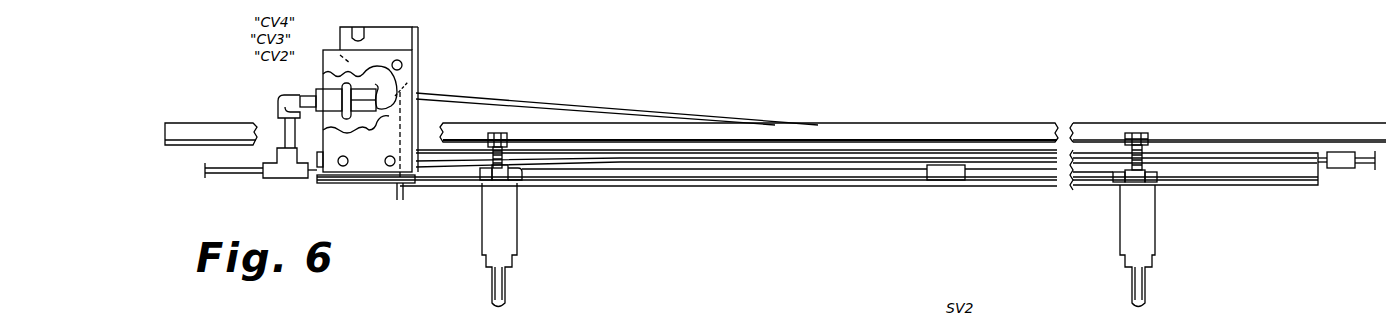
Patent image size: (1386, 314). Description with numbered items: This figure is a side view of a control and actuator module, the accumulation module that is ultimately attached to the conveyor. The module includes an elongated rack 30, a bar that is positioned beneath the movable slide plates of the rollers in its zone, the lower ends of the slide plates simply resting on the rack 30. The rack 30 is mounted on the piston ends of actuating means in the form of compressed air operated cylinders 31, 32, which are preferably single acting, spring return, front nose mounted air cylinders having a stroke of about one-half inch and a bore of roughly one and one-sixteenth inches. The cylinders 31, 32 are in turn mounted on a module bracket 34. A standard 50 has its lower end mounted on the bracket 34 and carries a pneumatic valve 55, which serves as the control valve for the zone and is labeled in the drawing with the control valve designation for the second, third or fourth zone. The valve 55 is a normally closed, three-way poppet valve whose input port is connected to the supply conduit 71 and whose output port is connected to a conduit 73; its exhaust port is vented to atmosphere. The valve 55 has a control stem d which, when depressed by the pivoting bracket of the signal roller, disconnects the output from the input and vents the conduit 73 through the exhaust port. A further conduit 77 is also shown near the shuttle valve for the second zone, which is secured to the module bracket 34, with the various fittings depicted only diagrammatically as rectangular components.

The rack 30 is at (880, 131).
The compressed air operated cylinder 31 is at (522, 242).
The compressed air operated cylinder 32 is at (1158, 240).
The module bracket 34 is at (1210, 183).
The standard 50 is at (364, 178).
The pneumatic valve 55 is at (318, 86).
The supply conduit 71 is at (233, 177).
The conduit 73 is at (707, 113).
The conduit 77 is at (899, 308).
The control stem d is at (363, 100).